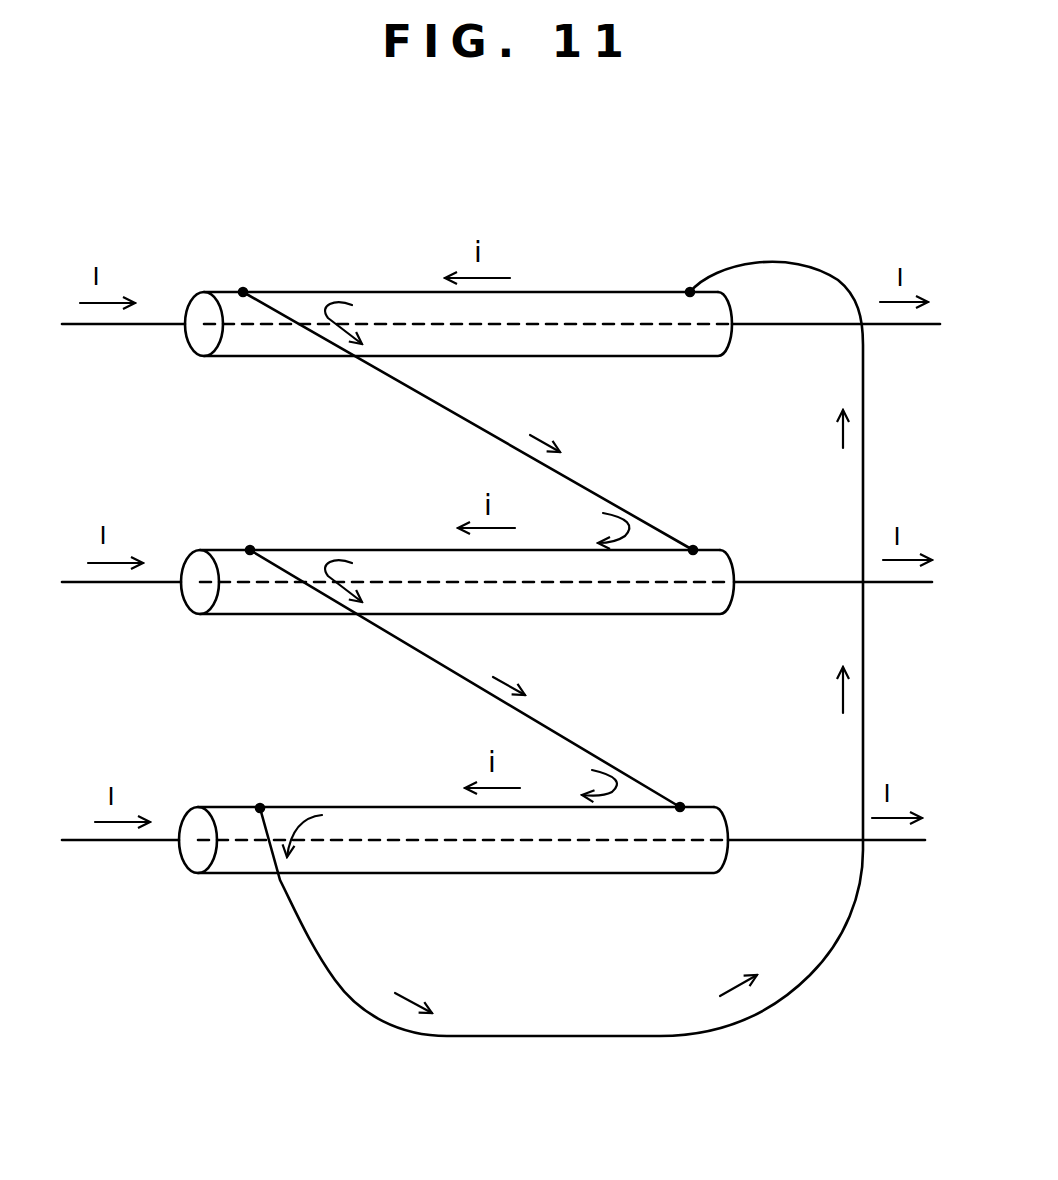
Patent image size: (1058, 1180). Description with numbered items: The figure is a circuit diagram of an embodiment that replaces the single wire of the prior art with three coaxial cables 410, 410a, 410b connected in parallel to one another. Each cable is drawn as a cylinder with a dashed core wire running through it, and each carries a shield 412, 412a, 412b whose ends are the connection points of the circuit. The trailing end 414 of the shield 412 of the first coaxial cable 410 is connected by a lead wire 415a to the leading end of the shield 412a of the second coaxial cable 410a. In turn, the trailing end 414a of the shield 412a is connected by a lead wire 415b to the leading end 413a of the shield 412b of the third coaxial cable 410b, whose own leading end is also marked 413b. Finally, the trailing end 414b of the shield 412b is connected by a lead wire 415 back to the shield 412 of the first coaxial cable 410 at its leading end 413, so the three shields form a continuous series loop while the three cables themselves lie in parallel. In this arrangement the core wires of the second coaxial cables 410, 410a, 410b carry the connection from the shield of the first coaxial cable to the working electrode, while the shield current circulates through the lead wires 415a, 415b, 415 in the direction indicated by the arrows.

The coaxial cable 410 is at (733, 305).
The coaxial cable 410a is at (737, 562).
The coaxial cable 410b is at (730, 820).
The shield 412 is at (586, 292).
The shield 412a is at (370, 550).
The shield 412b is at (372, 807).
The leading end 413 is at (690, 292).
The leading end 413a is at (693, 550).
The leading end 413b is at (680, 807).
The trailing end 414 is at (243, 292).
The trailing end 414a is at (250, 550).
The trailing end 414b is at (260, 808).
The lead wire 415 is at (863, 497).
The lead wire 415a is at (478, 422).
The lead wire 415b is at (452, 667).